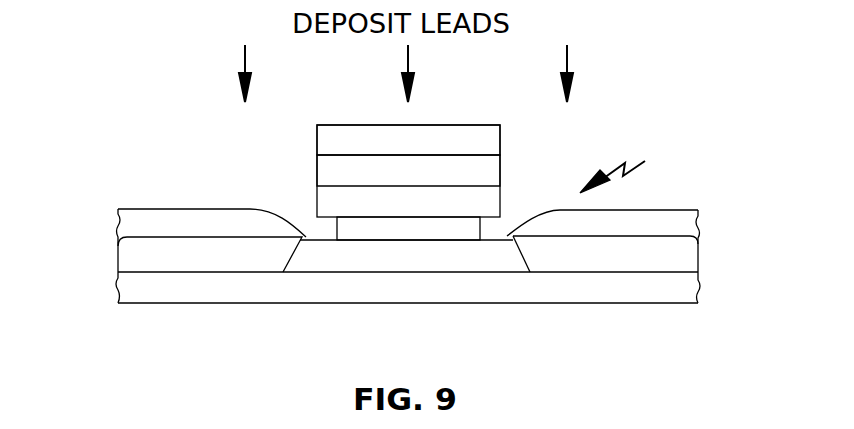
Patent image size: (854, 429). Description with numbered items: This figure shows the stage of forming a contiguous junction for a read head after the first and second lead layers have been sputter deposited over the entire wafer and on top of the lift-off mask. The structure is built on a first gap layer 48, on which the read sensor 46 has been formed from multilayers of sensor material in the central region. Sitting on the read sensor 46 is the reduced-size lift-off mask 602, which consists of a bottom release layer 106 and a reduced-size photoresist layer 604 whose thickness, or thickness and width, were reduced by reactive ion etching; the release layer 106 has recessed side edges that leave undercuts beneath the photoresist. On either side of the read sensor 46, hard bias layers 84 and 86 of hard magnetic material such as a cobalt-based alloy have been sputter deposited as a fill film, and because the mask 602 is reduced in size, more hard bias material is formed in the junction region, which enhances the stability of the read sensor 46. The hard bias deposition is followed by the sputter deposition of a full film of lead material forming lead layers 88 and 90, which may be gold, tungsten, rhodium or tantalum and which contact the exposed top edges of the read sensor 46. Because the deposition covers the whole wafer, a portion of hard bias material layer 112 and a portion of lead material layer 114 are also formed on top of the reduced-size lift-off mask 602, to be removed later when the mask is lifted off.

The first gap layer 48 is at (130, 290).
The read sensor 46 is at (473, 258).
The hard bias layer 84 is at (130, 252).
The hard bias layer 86 is at (660, 262).
The lead layer 88 is at (130, 224).
The lead layer 90 is at (658, 228).
The release layer 106 is at (482, 227).
The hard bias material layer 112 is at (500, 163).
The lead material layer 114 is at (317, 140).
The reduced-size lift-off mask 602 is at (635, 162).
The reduced-size photoresist layer 604 is at (317, 203).